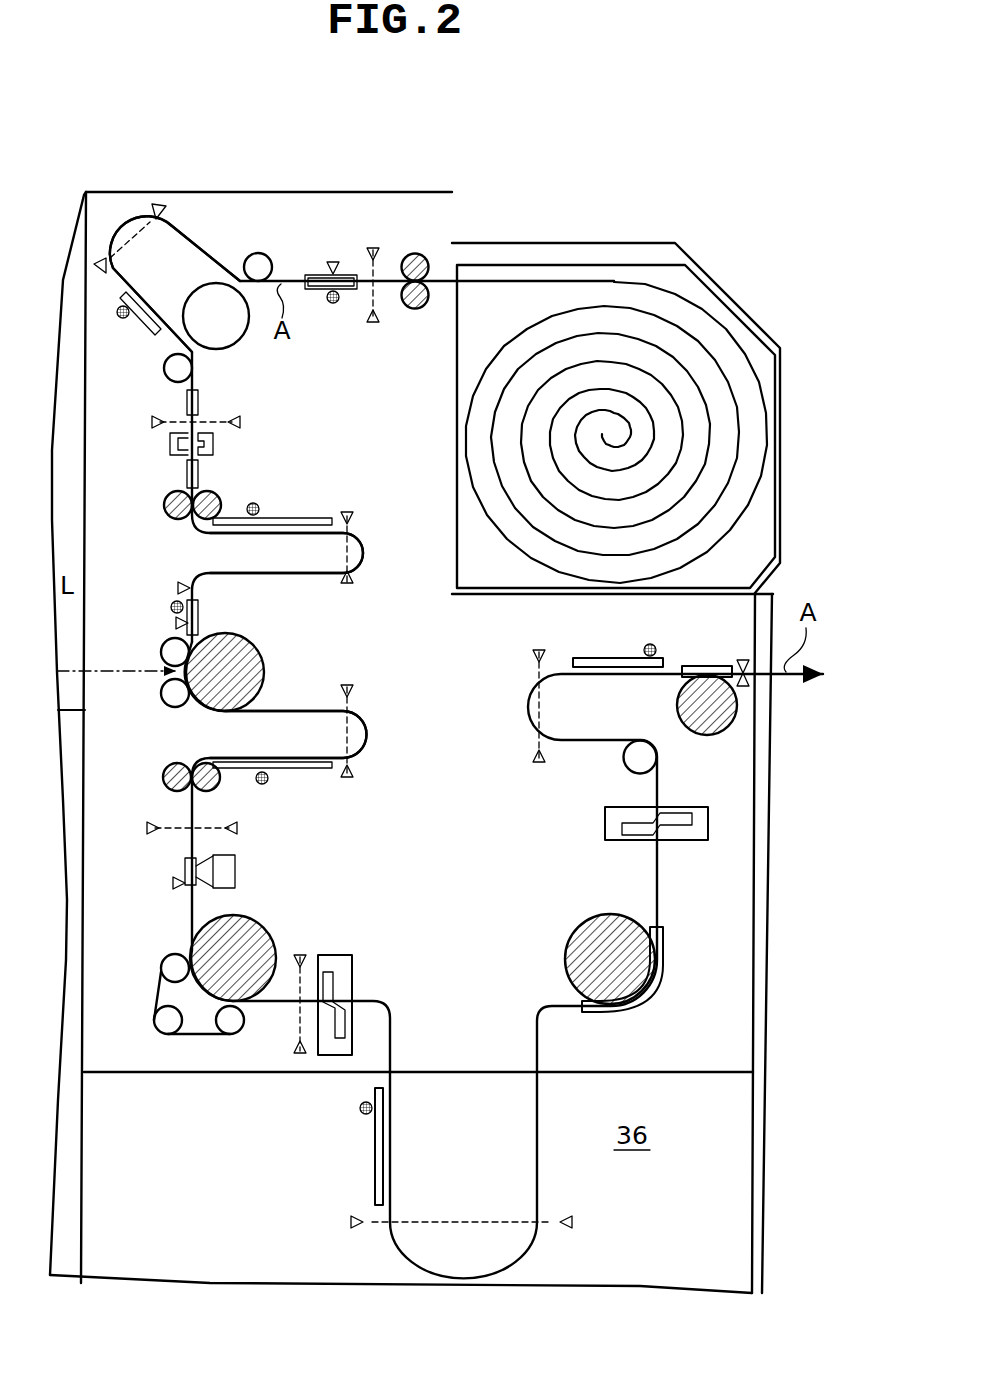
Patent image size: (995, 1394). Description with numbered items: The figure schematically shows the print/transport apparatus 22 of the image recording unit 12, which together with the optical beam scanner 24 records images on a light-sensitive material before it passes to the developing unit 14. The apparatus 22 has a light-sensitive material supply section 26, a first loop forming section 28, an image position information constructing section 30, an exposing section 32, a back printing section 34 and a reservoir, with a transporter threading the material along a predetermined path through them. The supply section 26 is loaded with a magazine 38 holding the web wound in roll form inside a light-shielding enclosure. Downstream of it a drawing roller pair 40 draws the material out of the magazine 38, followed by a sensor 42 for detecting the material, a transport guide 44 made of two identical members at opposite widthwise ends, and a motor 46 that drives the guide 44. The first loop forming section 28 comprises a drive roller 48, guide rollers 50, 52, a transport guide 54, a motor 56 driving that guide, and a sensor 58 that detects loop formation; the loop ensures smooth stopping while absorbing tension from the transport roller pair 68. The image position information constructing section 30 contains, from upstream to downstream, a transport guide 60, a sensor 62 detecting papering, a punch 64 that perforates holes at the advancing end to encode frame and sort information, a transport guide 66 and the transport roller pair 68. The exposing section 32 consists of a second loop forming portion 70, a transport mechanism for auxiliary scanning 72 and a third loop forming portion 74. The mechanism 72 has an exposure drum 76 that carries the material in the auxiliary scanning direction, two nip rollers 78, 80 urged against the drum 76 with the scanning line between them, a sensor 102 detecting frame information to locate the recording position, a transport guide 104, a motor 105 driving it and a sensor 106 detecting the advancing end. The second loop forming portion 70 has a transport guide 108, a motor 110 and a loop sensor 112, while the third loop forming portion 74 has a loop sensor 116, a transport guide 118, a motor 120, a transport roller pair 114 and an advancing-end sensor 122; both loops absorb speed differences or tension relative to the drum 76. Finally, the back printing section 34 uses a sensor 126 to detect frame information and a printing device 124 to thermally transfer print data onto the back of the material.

The image recording unit 12 is at (495, 202).
The developing unit 14 is at (770, 870).
The print/transport apparatus 22 is at (300, 192).
The optical beam scanner 24 is at (77, 212).
The light-sensitive material supply section 26 is at (716, 300).
The first loop forming section 28 is at (208, 224).
The image position information constructing section 30 is at (282, 432).
The exposing section 32 is at (322, 642).
The back printing section 34 is at (290, 858).
The magazine 38 is at (658, 243).
The drawing roller pair 40 is at (415, 253).
The sensor 42 is at (373, 324).
The transport guide 44 is at (333, 272).
The motor 46 is at (333, 304).
The drive roller 48 is at (205, 305).
The guide roller 50 is at (258, 255).
The guide roller 52 is at (164, 368).
The transport guide 54 is at (150, 330).
The motor 56 is at (117, 311).
The sensor 58 is at (160, 206).
The transport guide 60 is at (200, 402).
The sensor 62 is at (238, 422).
The punch 64 is at (170, 444).
The transport guide 66 is at (199, 474).
The transport roller pair 68 is at (164, 503).
The second loop forming portion 70 is at (370, 566).
The transport mechanism for auxiliary scanning 72 is at (194, 719).
The third loop forming portion 74 is at (378, 745).
The exposure drum 76 is at (250, 650).
The nip roller 78 is at (163, 646).
The nip roller 80 is at (161, 700).
The sensor 102 is at (186, 584).
The transport guide 104 is at (200, 616).
The motor 105 is at (172, 600).
The sensor 106 is at (176, 620).
The transport guide 108 is at (325, 518).
The motor 110 is at (258, 505).
The sensor 112 is at (356, 518).
The transport roller pair 114 is at (170, 790).
The sensor 116 is at (357, 776).
The transport guide 118 is at (332, 770).
The motor 120 is at (265, 785).
The sensor 122 is at (240, 828).
The printing device 124 is at (236, 876).
The sensor 126 is at (172, 883).